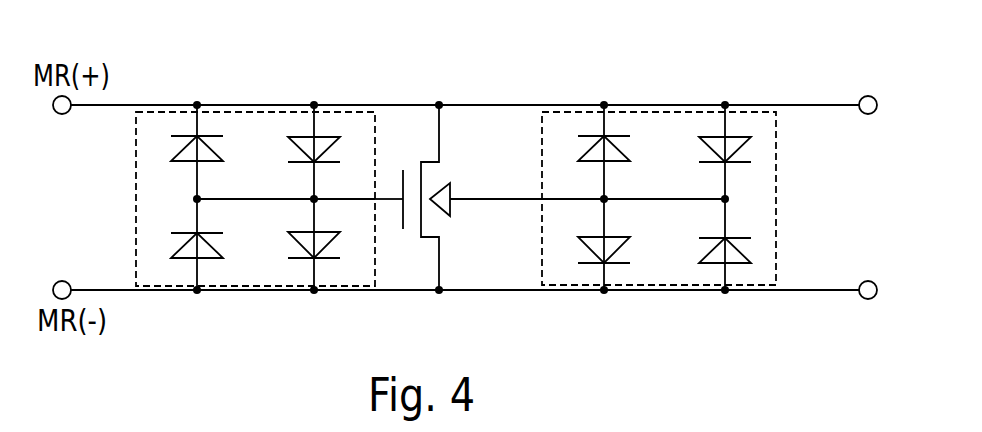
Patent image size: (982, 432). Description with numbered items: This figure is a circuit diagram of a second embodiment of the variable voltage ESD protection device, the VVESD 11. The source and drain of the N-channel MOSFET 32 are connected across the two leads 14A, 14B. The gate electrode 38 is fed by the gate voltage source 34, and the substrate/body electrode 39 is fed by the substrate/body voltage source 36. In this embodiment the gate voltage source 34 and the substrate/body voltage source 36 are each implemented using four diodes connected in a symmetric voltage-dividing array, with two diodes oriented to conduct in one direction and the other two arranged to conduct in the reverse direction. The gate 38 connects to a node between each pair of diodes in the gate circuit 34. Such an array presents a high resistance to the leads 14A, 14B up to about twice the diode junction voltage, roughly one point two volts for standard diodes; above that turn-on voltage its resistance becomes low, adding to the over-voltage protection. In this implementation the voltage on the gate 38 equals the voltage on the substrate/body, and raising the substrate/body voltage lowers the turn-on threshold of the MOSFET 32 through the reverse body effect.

The VVESD 11 is at (247, 65).
The lead 14A is at (790, 100).
The lead 14B is at (803, 293).
The N-channel MOSFET 32 is at (445, 150).
The gate voltage source 34 is at (353, 122).
The substrate/body voltage source 36 is at (666, 125).
The gate electrode 38 is at (383, 207).
The substrate/body electrode 39 is at (494, 207).